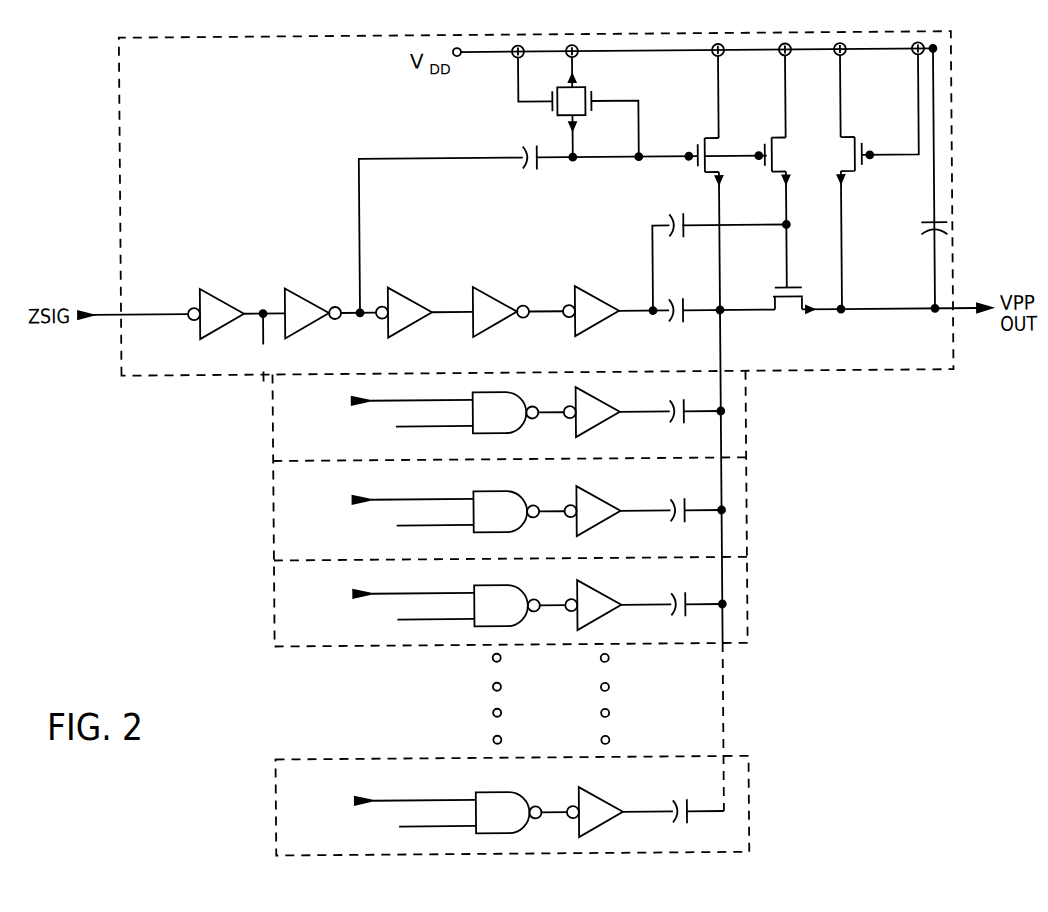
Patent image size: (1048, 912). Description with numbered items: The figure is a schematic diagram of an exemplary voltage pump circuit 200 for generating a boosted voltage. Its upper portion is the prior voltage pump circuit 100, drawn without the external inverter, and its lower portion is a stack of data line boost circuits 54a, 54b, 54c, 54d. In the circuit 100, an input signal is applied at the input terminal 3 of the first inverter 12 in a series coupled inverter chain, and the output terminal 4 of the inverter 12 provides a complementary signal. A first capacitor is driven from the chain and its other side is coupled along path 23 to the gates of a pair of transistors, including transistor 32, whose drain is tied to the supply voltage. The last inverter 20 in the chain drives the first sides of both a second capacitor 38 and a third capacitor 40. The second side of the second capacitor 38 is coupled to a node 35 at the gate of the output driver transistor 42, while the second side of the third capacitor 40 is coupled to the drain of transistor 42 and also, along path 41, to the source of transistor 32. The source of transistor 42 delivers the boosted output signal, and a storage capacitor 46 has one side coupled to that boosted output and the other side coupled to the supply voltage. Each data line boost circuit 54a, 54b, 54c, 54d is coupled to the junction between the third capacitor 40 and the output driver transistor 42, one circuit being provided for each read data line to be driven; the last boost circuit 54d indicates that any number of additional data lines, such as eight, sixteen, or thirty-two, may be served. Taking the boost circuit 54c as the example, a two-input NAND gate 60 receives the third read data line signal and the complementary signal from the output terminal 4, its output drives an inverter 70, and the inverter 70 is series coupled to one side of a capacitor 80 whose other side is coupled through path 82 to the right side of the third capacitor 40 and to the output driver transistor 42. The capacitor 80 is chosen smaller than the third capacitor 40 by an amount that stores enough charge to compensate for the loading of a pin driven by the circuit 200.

The input terminal 3 is at (152, 309).
The output terminal 4 is at (258, 307).
The inverter 12 is at (211, 288).
The inverter 20 is at (577, 290).
The path 23 is at (612, 100).
The transistor 32 is at (712, 132).
The node 35 is at (787, 198).
The second capacitor 38 is at (671, 223).
The third capacitor 40 is at (688, 314).
The path 41 is at (721, 245).
The output driver transistor 42 is at (795, 299).
The storage capacitor 46 is at (932, 220).
The data line boost circuit 54a is at (746, 433).
The data line boost circuit 54b is at (746, 508).
The data line boost circuit 54c is at (568, 636).
The data line boost circuit 54d is at (746, 798).
The two-input NAND gate 60 is at (490, 639).
The inverter 70 is at (592, 633).
The capacitor 80 is at (667, 639).
The path 82 is at (721, 541).
The voltage pump circuit 100 is at (121, 170).
The voltage pump circuit 200 is at (190, 463).